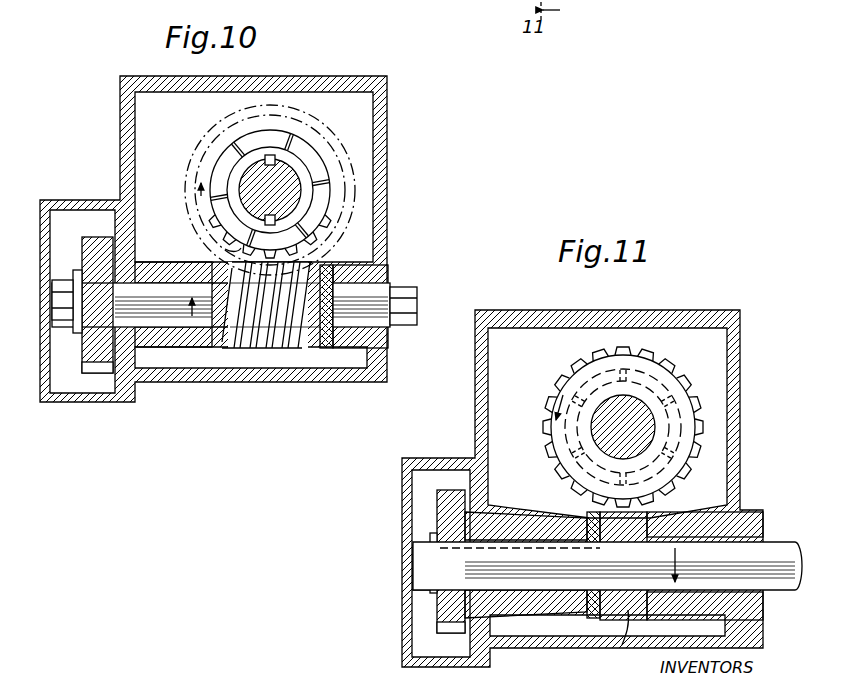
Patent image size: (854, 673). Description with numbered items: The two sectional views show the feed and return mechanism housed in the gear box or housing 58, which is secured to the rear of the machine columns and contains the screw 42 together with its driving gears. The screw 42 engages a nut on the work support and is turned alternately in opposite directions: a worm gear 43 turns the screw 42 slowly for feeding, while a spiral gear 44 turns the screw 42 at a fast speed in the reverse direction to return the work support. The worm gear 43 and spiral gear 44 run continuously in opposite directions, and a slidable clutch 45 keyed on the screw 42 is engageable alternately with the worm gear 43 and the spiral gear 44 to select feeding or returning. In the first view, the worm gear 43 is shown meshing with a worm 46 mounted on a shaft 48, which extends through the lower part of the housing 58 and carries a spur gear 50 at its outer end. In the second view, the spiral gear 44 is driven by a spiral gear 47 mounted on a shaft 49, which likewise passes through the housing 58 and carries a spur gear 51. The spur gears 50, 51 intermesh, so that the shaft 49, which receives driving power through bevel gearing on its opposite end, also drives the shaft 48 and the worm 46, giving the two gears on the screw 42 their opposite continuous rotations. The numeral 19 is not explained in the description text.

In FIG. 10, the gear box or housing 58 is at (121, 128).
In FIG. 11, the gear box or housing 58 is at (742, 395).
In FIG. 10, the screw 42 is at (282, 172).
In FIG. 10, the worm gear 43 is at (225, 249).
In FIG. 10, the worm 46 is at (300, 345).
In FIG. 10, the shaft 48 is at (178, 305).
In FIG. 10, the spur gear 50 is at (98, 372).
In FIG. 11, the spiral gear 44 is at (676, 380).
In FIG. 11, the slidable clutch 45 is at (565, 384).
In FIG. 11, the shaft bearing 19 is at (540, 548).
In FIG. 11, the shaft 49 is at (782, 552).
In FIG. 11, the spur gear 51 is at (440, 510).
In FIG. 11, the spiral gear 47 is at (622, 645).